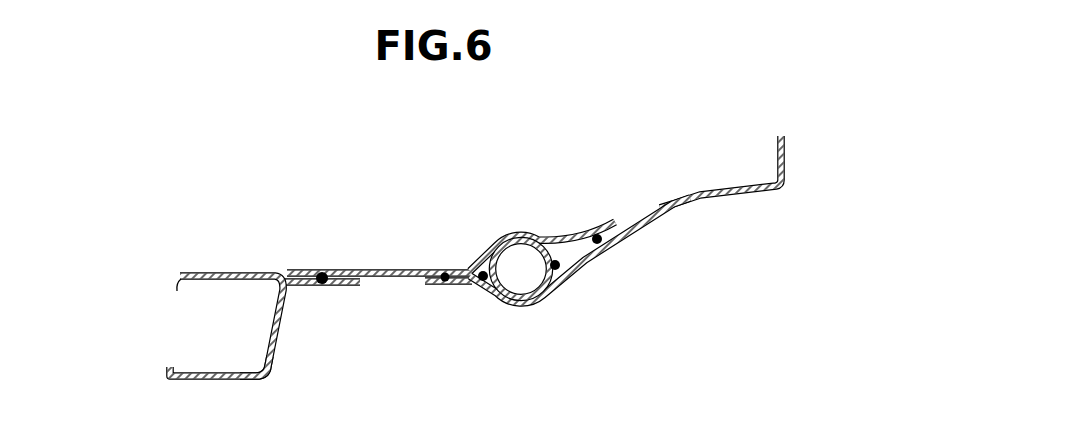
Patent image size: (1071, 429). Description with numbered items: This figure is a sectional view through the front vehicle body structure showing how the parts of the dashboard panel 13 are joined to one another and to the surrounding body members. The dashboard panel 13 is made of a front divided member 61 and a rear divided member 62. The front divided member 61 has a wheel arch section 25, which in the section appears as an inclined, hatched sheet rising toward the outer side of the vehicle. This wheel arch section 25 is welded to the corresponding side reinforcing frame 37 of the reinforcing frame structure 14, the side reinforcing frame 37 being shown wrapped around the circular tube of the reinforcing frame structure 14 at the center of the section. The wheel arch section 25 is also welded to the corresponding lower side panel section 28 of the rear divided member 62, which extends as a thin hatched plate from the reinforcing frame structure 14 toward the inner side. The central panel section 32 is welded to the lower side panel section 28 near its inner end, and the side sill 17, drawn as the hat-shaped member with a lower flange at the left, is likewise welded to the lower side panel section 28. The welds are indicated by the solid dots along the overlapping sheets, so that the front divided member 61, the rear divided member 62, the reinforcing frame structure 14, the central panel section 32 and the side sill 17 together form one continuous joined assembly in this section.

The dashboard panel 13 is at (240, 43).
The reinforcing frame structure 14 is at (508, 262).
The side sill 17 is at (186, 367).
The wheel arch section 25 is at (685, 192).
The lower side panel section 28 is at (382, 267).
The central panel section 32 is at (222, 270).
The side reinforcing frame 37 is at (519, 234).
The front divided member 61 is at (633, 177).
The rear divided member 62 is at (187, 258).